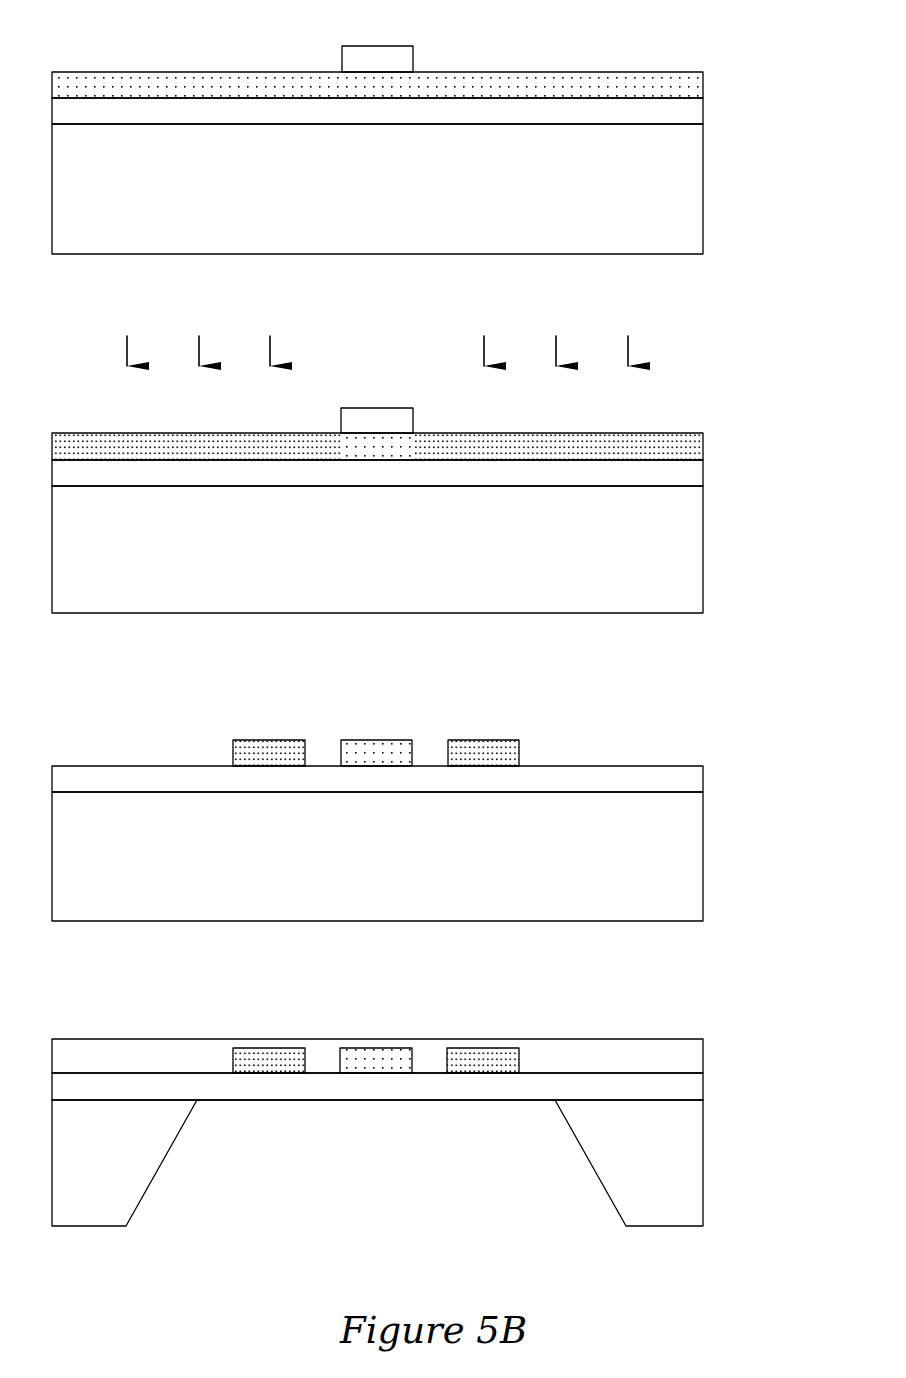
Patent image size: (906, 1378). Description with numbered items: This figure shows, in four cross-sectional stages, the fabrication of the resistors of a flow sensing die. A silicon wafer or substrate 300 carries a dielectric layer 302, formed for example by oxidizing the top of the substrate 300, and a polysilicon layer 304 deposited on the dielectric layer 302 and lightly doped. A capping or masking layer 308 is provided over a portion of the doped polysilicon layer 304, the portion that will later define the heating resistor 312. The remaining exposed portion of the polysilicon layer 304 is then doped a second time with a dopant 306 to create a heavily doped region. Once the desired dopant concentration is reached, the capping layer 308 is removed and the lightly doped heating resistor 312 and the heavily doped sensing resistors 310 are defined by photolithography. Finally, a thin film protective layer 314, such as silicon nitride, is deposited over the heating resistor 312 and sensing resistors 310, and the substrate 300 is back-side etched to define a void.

The substrate 300 is at (697, 188).
The dielectric layer 302 is at (697, 111).
The polysilicon layer 304 is at (697, 83).
The dopant 306 is at (628, 345).
The capping layer 308 is at (378, 46).
The sensing resistors 310 is at (270, 433).
The heating resistor 312 is at (378, 408).
The thin film protective layer 314 is at (697, 1053).